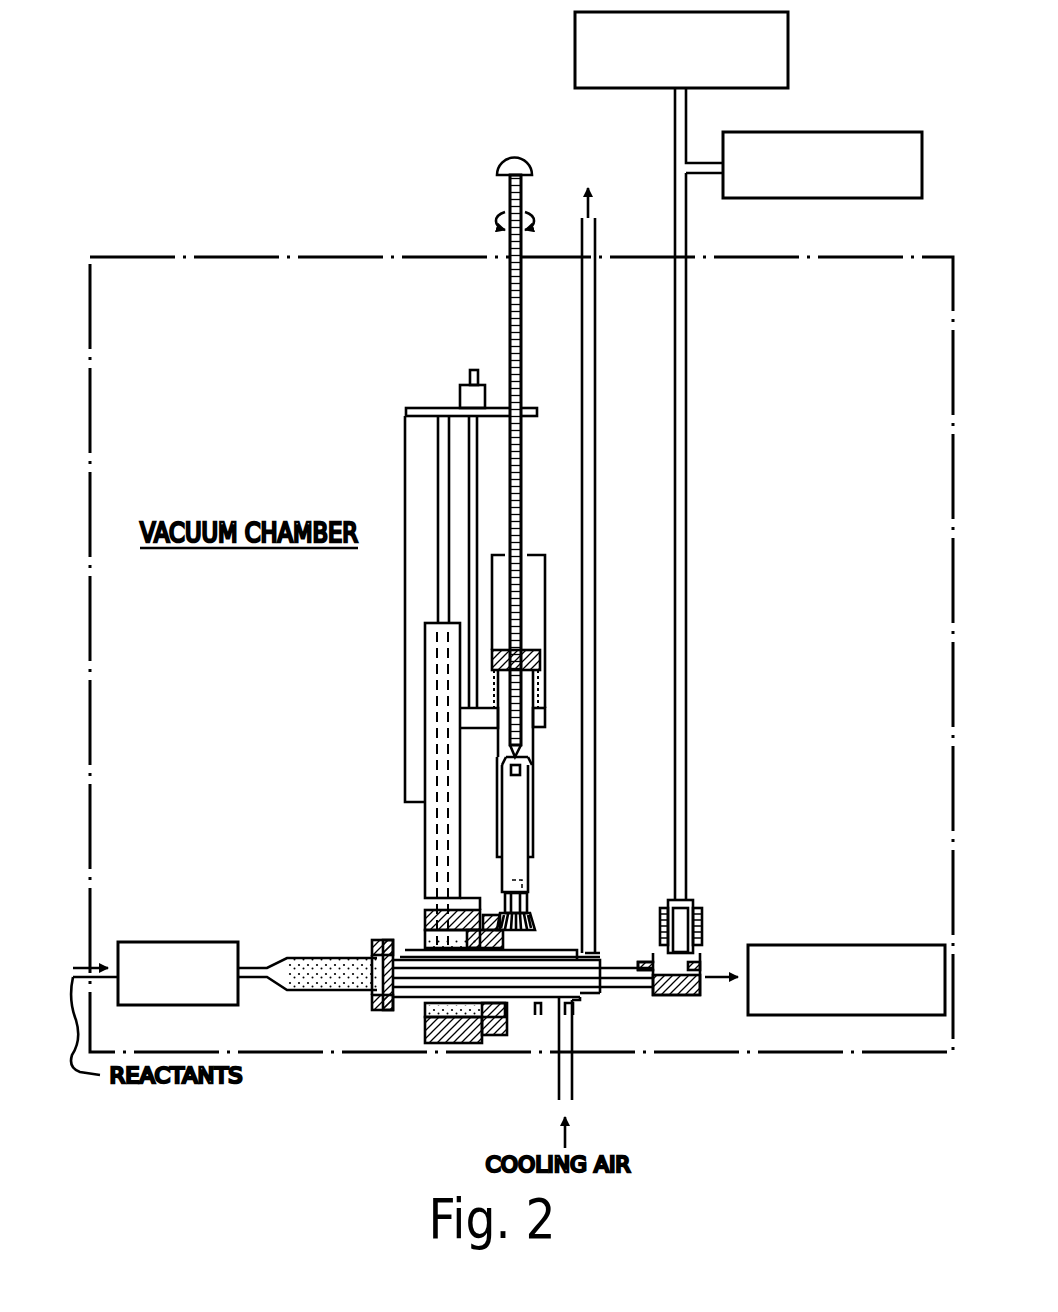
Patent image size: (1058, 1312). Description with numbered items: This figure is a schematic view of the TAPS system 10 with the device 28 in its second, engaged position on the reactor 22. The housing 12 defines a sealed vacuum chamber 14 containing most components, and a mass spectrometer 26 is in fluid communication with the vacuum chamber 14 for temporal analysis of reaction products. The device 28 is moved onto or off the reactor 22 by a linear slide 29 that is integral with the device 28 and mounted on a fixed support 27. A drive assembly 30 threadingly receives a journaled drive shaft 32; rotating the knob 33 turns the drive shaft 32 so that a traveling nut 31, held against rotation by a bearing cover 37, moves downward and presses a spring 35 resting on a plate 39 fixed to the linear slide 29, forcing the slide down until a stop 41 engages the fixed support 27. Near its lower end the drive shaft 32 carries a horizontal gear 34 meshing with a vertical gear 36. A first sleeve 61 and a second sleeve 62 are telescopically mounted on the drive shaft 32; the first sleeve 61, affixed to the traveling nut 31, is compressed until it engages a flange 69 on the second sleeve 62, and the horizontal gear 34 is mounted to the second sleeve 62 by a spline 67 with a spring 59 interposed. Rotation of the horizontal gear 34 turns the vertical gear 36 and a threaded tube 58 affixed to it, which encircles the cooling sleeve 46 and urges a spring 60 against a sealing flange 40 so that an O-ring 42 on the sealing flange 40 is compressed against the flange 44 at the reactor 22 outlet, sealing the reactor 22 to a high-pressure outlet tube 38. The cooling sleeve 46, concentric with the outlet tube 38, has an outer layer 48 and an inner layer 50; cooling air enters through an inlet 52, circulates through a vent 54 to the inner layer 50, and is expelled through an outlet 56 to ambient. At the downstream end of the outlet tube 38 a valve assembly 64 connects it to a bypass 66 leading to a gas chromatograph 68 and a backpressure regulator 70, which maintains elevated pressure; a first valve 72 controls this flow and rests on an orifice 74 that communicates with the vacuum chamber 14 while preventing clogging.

The TAPS system 10 is at (166, 244).
The housing 12 is at (263, 257).
The vacuum chamber 14 is at (222, 670).
The reactor 22 is at (285, 955).
The mass spectrometer 26 is at (850, 945).
The fixed support 27 is at (405, 468).
The device 28 is at (417, 570).
The linear slide 29 is at (425, 822).
The drive assembly 30 is at (555, 715).
The traveling nut 31 is at (540, 656).
The drive shaft 32 is at (522, 434).
The knob 33 is at (498, 166).
The horizontal gear 34 is at (536, 922).
The spring 35 is at (540, 684).
The vertical gear 36 is at (498, 1040).
The bearing cover 37 is at (545, 562).
The high-pressure outlet tube 38 is at (405, 1000).
The plate 39 is at (545, 716).
The sealing flange 40 is at (395, 948).
The stop 41 is at (460, 398).
The O-ring 42 is at (372, 946).
The flange 44 is at (372, 1003).
The cooling sleeve 46 is at (540, 1003).
The outer layer 48 is at (580, 1000).
The inner layer 50 is at (602, 992).
The inlet 52 is at (576, 1082).
The vent 54 is at (385, 1012).
The outlet 56 is at (598, 232).
The threaded tube 58 is at (448, 1043).
The spring 59 is at (487, 915).
The spring 60 is at (428, 940).
The first sleeve 61 is at (530, 752).
The second sleeve 62 is at (518, 802).
The valve assembly 64 is at (710, 914).
The bypass 66 is at (687, 750).
The spline 67 is at (527, 897).
The gas chromatograph 68 is at (788, 78).
The flange 69 is at (533, 845).
The backpressure regulator 70 is at (860, 132).
The first valve 72 is at (702, 922).
The orifice 74 is at (698, 962).